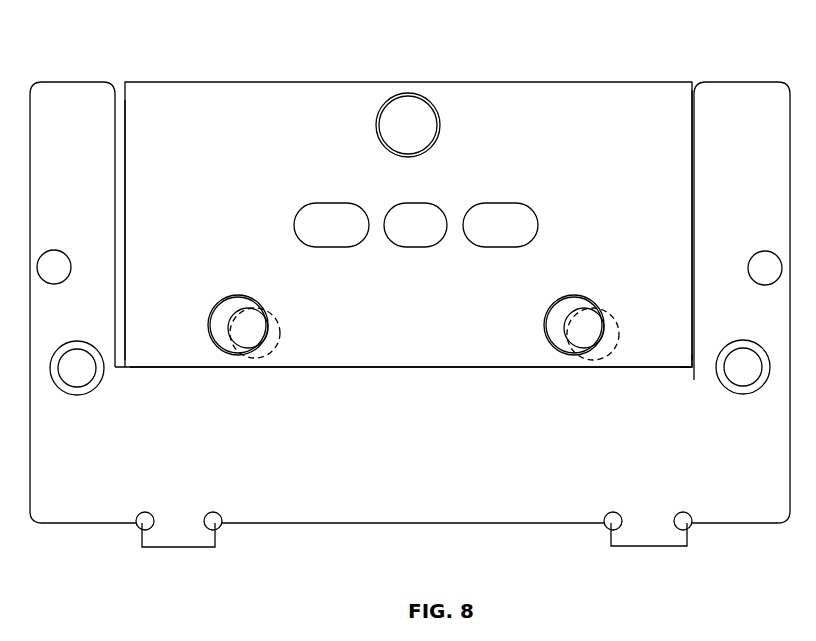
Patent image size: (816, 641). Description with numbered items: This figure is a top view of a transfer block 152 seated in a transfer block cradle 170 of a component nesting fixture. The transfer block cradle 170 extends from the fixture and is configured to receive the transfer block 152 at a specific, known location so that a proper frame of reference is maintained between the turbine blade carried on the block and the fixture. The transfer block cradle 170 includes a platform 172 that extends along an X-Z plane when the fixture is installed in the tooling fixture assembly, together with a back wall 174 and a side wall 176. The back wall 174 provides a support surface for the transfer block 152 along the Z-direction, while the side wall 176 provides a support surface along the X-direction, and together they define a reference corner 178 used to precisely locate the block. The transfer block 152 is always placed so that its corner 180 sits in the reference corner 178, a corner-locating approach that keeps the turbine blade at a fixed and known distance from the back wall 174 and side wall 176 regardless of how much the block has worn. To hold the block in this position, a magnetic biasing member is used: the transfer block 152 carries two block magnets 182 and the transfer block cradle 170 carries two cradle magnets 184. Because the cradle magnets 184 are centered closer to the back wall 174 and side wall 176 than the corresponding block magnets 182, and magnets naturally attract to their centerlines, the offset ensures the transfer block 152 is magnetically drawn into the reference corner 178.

The transfer block 152 is at (567, 82).
The transfer block cradle 170 is at (84, 508).
The platform 172 is at (121, 296).
The back wall 174 is at (507, 366).
The side wall 176 is at (691, 121).
The reference corner 178 is at (692, 375).
The corner 180 is at (688, 348).
The block magnets 182 is at (233, 296).
The cradle magnets 184 is at (282, 322).